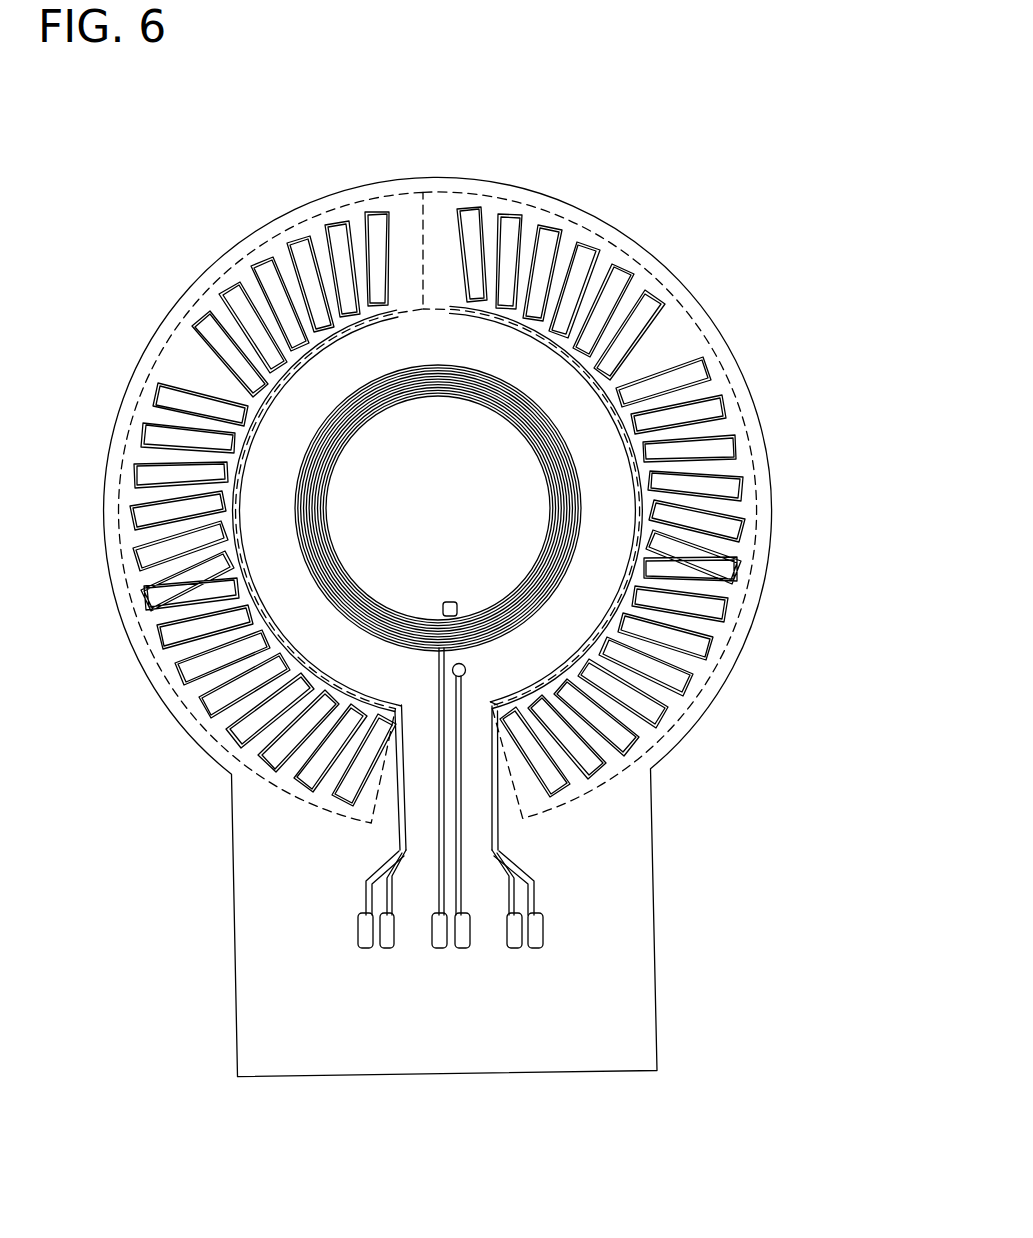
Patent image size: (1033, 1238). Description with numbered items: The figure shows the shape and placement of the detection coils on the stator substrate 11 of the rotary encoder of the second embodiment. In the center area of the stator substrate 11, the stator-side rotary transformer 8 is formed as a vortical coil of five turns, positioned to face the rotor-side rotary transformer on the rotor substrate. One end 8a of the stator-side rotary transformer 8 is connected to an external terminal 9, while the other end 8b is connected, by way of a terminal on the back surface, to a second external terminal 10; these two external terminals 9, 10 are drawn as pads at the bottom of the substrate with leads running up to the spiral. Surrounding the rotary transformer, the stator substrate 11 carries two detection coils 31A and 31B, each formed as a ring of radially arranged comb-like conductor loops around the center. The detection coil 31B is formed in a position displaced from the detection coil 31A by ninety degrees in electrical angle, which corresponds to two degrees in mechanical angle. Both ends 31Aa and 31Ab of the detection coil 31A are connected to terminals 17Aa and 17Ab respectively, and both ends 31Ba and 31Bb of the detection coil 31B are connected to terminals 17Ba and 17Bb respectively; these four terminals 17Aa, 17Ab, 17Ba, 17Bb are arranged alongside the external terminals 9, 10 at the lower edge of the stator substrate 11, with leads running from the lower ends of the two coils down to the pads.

The stator-side rotary transformer 8 is at (529, 445).
The one end of the stator-side rotary transformer 8a is at (463, 677).
The other end of the stator-side rotary transformer 8b is at (453, 603).
The external terminal 9 is at (440, 950).
The external terminal 10 is at (462, 950).
The stator substrate 11 is at (697, 725).
The terminal 17Aa is at (365, 950).
The terminal 17Ab is at (387, 950).
The terminal 17Ba is at (515, 950).
The terminal 17Bb is at (536, 950).
The detection coil 31A is at (263, 485).
The end of the detection coil 31Aa is at (397, 705).
The end of the detection coil 31Ab is at (398, 298).
The detection coil 31B is at (590, 485).
The end of the detection coil 31Ba is at (455, 297).
The end of the detection coil 31Bb is at (499, 706).